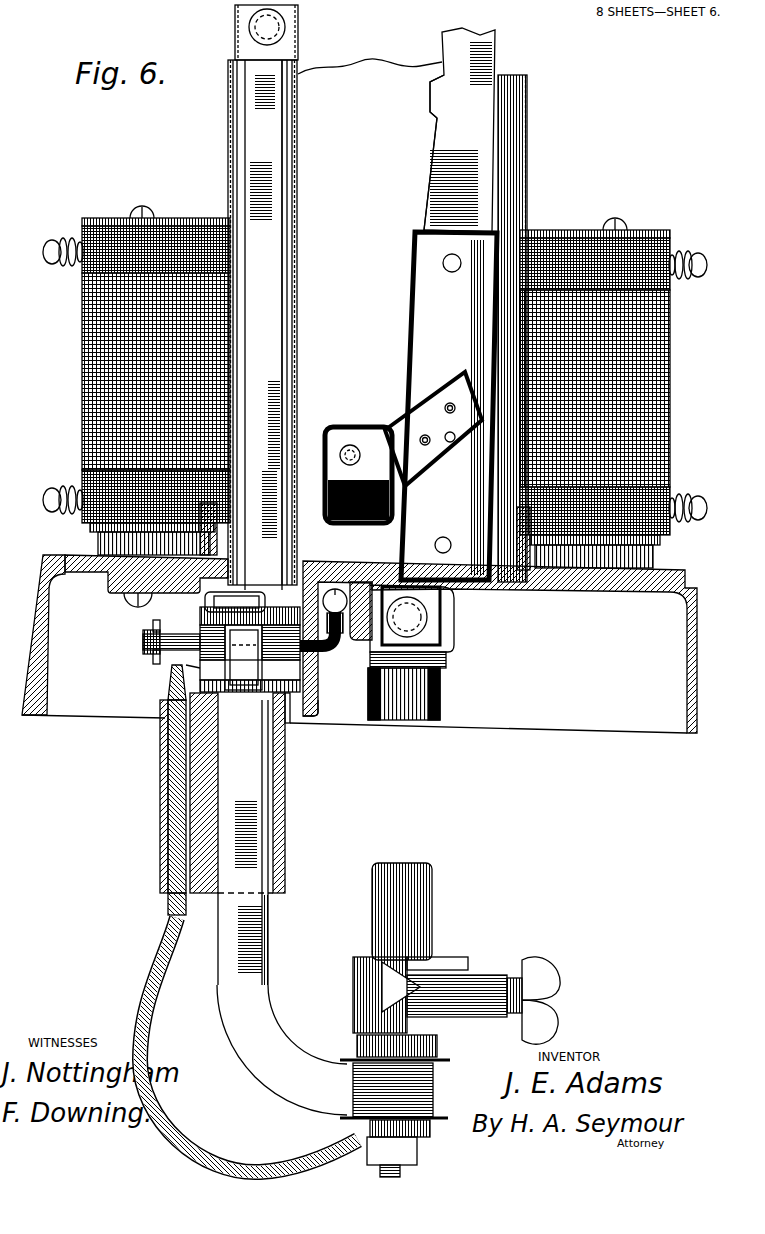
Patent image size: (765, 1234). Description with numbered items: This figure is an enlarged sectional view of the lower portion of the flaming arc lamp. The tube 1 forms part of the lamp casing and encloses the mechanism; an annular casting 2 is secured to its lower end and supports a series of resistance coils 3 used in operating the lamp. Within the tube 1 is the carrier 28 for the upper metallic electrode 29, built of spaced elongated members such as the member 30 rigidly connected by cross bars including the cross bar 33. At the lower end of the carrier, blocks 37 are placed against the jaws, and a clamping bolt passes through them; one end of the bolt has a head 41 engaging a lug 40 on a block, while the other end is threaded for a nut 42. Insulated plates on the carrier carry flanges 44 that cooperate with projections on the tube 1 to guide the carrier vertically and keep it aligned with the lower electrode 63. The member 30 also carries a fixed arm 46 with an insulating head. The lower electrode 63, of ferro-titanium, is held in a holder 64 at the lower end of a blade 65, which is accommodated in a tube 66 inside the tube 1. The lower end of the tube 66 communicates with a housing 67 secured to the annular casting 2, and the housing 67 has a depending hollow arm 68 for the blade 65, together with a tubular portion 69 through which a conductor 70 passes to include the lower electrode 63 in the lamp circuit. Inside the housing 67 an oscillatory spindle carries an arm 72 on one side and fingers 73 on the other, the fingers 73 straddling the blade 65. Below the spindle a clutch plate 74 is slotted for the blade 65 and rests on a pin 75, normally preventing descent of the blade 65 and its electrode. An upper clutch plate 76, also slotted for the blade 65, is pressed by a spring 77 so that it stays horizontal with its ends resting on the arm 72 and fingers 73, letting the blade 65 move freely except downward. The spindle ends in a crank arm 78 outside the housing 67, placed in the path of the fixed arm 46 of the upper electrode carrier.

The tube 1 is at (512, 170).
The annular casting 2 is at (42, 633).
The resistance coils 3 is at (375, 387).
The carrier 28 is at (428, 192).
The upper metallic electrode 29 is at (440, 703).
The elongated member 30 is at (459, 130).
The cross bar 33 is at (432, 106).
The blocks 37 is at (446, 670).
The lug 40 is at (452, 638).
The head 41 is at (435, 596).
The nut 42 is at (449, 406).
The flanges 44 is at (490, 300).
The fixed arm 46 is at (353, 440).
The lower electrode 63 is at (432, 913).
The holder 64 is at (450, 1067).
The blade 65 is at (262, 134).
The tube 66 is at (290, 372).
The housing 67 is at (316, 710).
The depending hollow arm 68 is at (287, 802).
The tubular portion 69 is at (162, 832).
The conductor 70 is at (248, 1032).
The arm 72 is at (230, 700).
The fingers 73 is at (182, 668).
The clutch plate 74 is at (298, 716).
The pin 75 is at (172, 712).
The clutch plate 76 is at (206, 618).
The spring 77 is at (262, 585).
The crank arm 78 is at (340, 595).